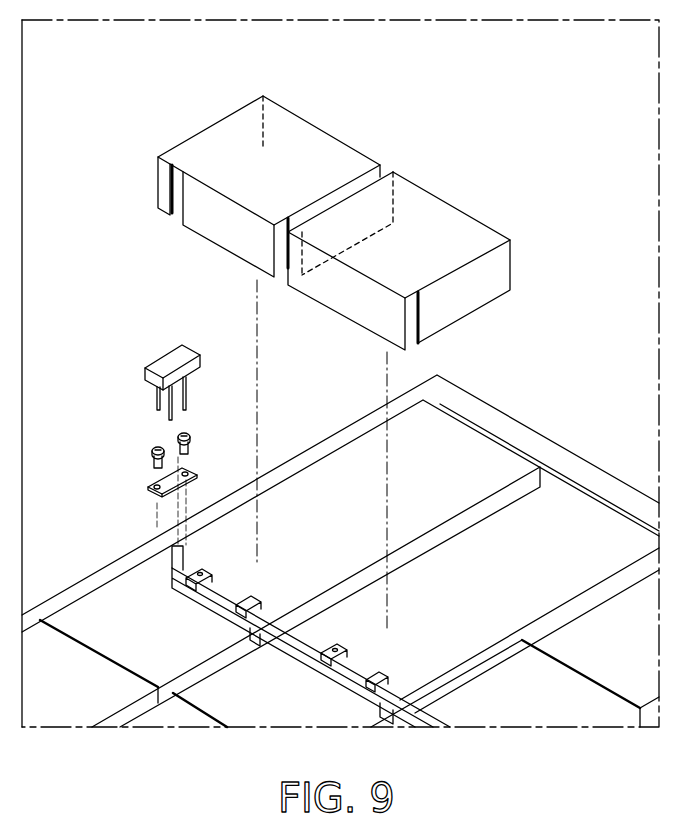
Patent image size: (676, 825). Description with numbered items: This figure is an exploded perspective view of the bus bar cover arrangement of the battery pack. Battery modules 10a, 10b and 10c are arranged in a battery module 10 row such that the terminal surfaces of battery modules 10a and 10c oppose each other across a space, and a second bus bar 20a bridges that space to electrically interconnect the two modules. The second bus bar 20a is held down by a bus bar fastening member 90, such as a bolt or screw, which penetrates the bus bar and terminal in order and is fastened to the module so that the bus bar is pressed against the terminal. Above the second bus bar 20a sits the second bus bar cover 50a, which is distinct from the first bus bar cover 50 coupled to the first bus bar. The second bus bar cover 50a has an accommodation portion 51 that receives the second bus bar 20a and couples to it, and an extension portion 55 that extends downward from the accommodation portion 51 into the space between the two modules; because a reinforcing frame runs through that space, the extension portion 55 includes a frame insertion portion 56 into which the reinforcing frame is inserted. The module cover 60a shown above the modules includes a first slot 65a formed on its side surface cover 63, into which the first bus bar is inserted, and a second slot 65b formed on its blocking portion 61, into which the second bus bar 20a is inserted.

The battery module 10 is at (623, 408).
The battery module 10a is at (483, 470).
The second panel 10b is at (555, 510).
The battery module 10c is at (75, 665).
The second bus bar 20a is at (150, 492).
The first bus bar cover 50 is at (275, 612).
The second bus bar cover 50a is at (136, 363).
The accommodation portion 51 is at (160, 362).
The extension portion 55 is at (157, 398).
The frame insertion portion 56 is at (170, 408).
The cover 60a is at (294, 215).
The blocking portion 61 is at (229, 195).
The side surface cover 63 is at (357, 183).
The first slot 65a is at (284, 250).
The second slot 65b is at (178, 203).
The bus bar fastening member 90 is at (152, 461).